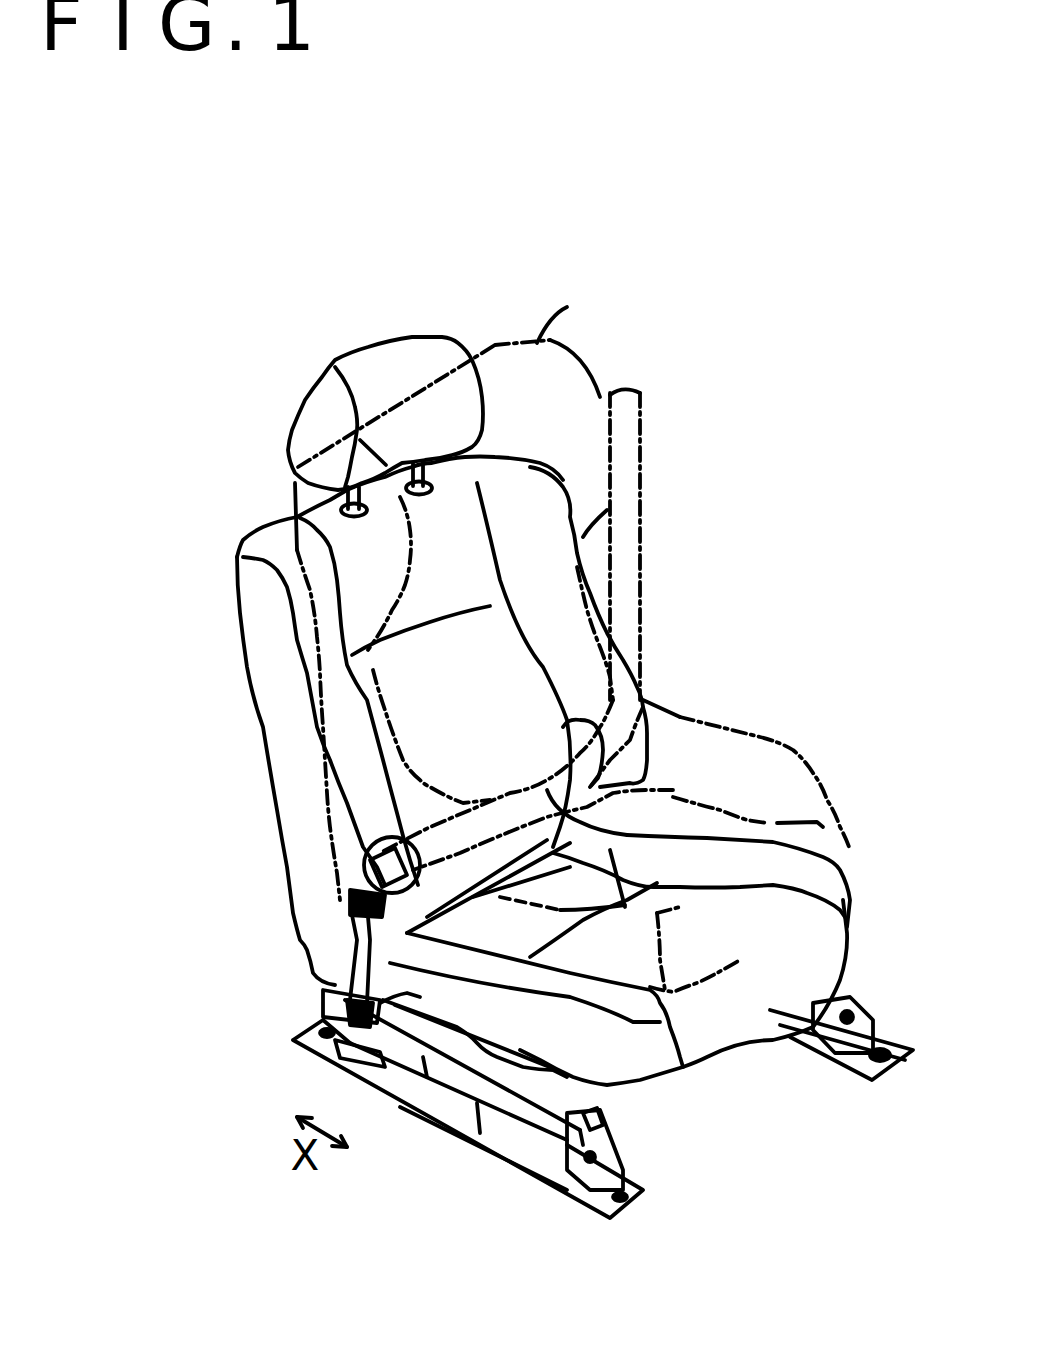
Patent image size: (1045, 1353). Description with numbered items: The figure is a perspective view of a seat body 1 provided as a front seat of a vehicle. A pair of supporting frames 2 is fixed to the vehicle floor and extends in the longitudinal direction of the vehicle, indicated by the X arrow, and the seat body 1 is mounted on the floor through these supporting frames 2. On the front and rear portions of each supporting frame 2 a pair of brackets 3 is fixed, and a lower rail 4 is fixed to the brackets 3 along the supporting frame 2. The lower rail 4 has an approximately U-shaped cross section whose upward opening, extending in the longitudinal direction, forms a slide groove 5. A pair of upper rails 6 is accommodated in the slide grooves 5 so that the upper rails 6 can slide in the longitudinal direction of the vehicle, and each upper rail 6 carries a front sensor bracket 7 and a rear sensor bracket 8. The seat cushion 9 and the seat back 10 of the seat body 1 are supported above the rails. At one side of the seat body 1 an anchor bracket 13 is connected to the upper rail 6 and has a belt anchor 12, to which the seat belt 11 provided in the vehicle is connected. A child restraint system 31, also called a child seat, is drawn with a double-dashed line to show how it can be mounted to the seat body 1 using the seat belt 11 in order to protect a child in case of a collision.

The seat body 1 is at (752, 545).
The supporting frame 2 is at (557, 1197).
The bracket 3 is at (327, 1067).
The lower rail 4 is at (483, 1103).
The slide groove 5 is at (597, 1110).
The upper rail 6 is at (437, 1057).
The front sensor bracket 7 is at (567, 1080).
The rear sensor bracket 8 is at (407, 993).
The seat cushion 9 is at (818, 873).
The seat back 10 is at (262, 633).
The seat belt 11 is at (553, 733).
The belt anchor 12 is at (343, 907).
The anchor bracket 13 is at (307, 963).
The child restraint system 31 is at (573, 305).